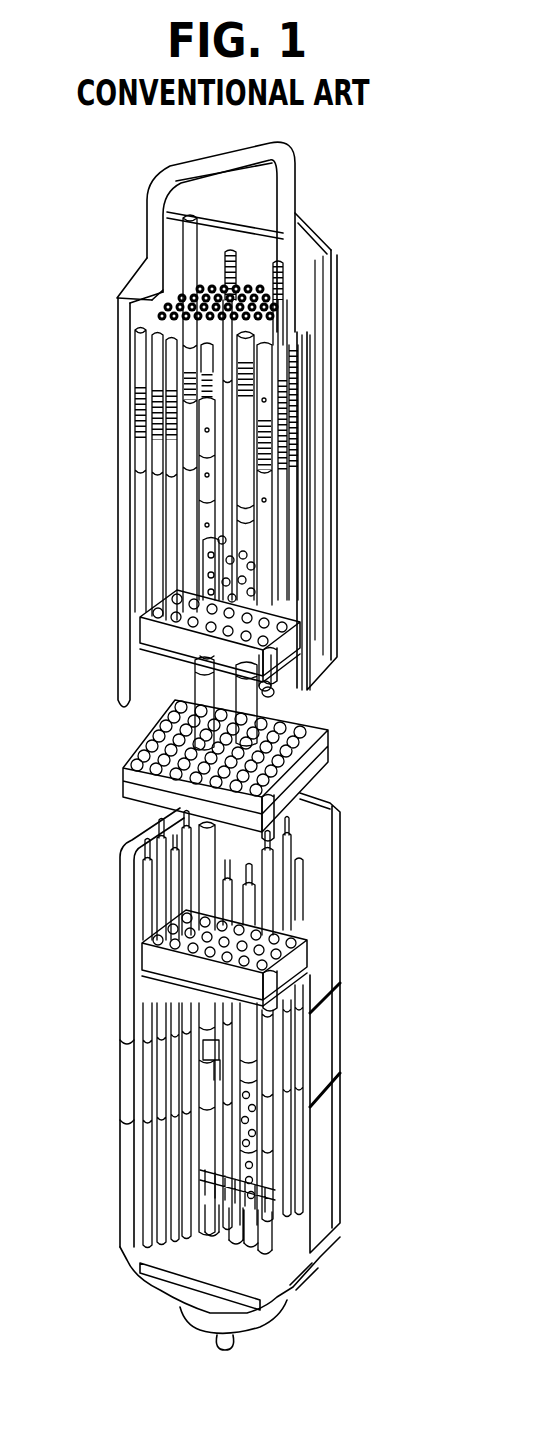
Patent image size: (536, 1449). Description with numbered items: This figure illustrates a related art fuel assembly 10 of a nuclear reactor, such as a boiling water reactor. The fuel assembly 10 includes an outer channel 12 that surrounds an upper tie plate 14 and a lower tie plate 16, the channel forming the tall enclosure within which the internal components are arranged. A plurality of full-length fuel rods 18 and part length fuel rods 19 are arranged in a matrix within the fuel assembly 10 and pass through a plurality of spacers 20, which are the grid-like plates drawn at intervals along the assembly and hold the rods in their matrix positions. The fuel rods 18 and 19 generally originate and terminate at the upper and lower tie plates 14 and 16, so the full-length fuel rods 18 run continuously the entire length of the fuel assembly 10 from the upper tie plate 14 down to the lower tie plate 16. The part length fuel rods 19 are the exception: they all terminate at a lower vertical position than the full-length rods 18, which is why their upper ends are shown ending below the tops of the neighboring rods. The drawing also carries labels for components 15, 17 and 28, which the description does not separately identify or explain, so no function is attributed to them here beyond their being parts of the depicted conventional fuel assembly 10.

The fuel assembly 10 is at (378, 442).
The outer channel 12 is at (317, 311).
The upper tie plate 14 is at (223, 352).
The hold-down spring 15 is at (298, 364).
The lower tie plate 16 is at (253, 1200).
The instrumentation tube 17 is at (220, 1137).
The full-length fuel rods 18 is at (175, 518).
The part length fuel rods 19 is at (267, 913).
The spacers 20 is at (147, 630).
The guide thimble top end / threaded rod 28 is at (233, 263).